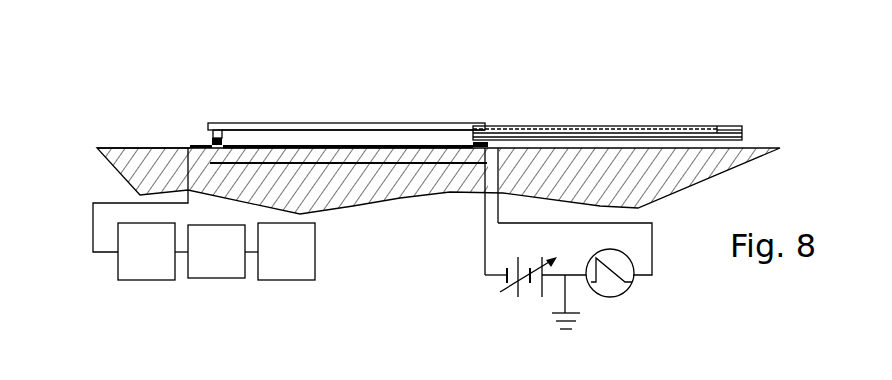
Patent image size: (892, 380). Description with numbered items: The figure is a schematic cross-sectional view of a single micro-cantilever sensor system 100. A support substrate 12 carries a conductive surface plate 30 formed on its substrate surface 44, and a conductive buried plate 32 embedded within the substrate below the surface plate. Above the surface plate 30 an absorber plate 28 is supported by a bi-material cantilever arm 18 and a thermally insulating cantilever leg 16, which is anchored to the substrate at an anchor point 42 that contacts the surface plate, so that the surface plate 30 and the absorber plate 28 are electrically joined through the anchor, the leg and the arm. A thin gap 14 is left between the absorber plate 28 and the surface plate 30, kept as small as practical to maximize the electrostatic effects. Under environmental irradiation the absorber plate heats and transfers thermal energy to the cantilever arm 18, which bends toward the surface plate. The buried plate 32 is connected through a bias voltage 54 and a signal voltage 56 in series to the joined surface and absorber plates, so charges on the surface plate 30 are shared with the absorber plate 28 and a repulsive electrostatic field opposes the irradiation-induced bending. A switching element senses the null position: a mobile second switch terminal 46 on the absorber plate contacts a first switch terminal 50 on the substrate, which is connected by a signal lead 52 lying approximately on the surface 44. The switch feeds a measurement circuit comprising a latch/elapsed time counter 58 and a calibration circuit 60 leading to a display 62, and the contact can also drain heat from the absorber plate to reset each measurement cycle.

The sensor system 100 is at (239, 97).
The substrate 12 is at (625, 191).
The gap 14 is at (332, 137).
The cantilever leg 16 is at (630, 133).
The cantilever arm 18 is at (562, 126).
The absorber plate 28 is at (263, 123).
The surface plate 30 is at (373, 145).
The buried plate 32 is at (328, 162).
The anchor point 42 is at (488, 143).
The substrate surface 44 is at (133, 148).
The second switch terminal 46 is at (210, 138).
The first switch terminal 50 is at (213, 143).
The signal lead 52 is at (193, 148).
The bias voltage 54 is at (520, 297).
The signal voltage 56 is at (618, 297).
The latch/elapsed time counter 58 is at (148, 280).
The calibration circuit 60 is at (218, 280).
The display 62 is at (290, 280).